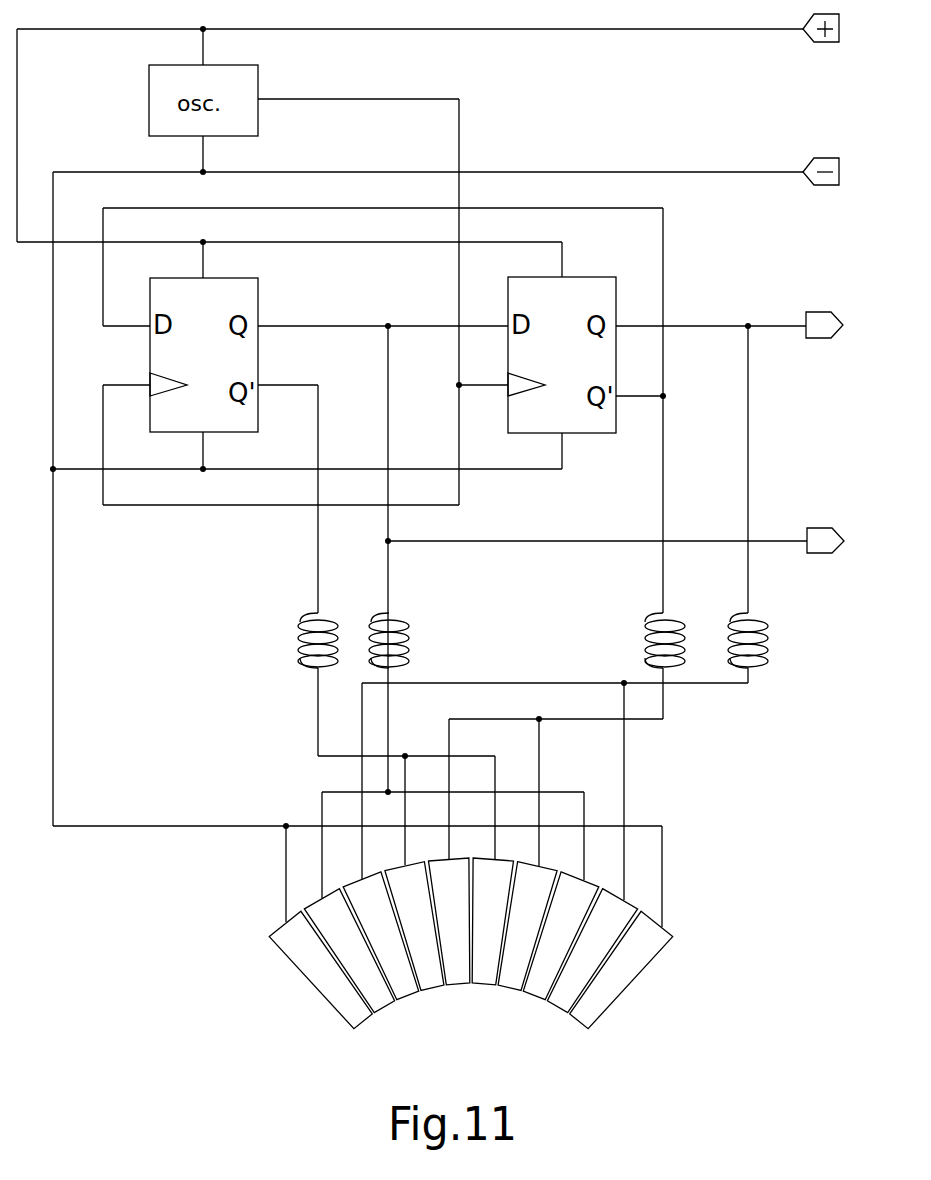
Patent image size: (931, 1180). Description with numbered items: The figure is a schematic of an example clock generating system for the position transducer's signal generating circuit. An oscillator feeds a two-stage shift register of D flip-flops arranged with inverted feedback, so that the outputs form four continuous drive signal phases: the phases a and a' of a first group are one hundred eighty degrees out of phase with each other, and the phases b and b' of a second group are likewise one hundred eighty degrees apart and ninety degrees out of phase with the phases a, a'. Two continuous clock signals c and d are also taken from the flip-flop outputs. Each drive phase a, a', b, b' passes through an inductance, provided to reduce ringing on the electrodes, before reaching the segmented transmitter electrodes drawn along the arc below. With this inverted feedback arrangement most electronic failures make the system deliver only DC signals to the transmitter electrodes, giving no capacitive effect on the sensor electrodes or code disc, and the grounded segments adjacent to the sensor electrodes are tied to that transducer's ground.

The drive signal phase a is at (380, 609).
The drive signal phase a' is at (309, 609).
The drive signal phase b is at (743, 608).
The drive signal phase b' is at (653, 608).
The clock signal c is at (849, 538).
The clock signal d is at (849, 323).